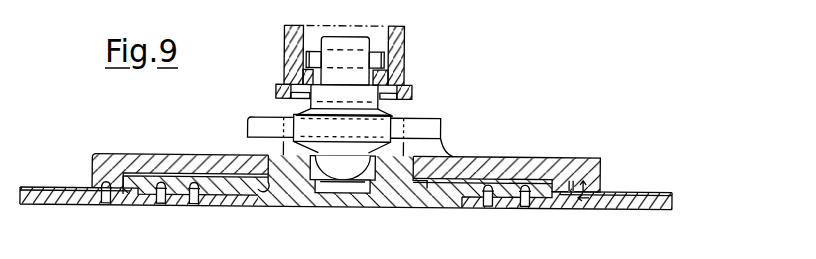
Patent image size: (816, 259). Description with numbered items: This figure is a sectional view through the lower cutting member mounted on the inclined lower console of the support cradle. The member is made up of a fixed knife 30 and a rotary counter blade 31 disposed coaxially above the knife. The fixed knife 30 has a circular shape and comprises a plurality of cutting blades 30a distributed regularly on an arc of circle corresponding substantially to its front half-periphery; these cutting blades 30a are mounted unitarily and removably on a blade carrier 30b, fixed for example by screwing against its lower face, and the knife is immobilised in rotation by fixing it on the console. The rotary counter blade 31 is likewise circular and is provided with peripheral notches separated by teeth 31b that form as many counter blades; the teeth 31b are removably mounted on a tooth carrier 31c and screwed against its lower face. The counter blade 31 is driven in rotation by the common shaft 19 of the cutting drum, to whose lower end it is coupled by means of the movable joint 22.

The common shaft 19 is at (419, 50).
The movable joint 22 is at (424, 103).
The fixed knife 30 is at (614, 220).
The cutting blades 30a is at (50, 197).
The blade carrier 30b is at (213, 182).
The rotary counter blade 31 is at (647, 177).
The teeth 31b is at (32, 186).
The tooth carrier 31c is at (128, 153).